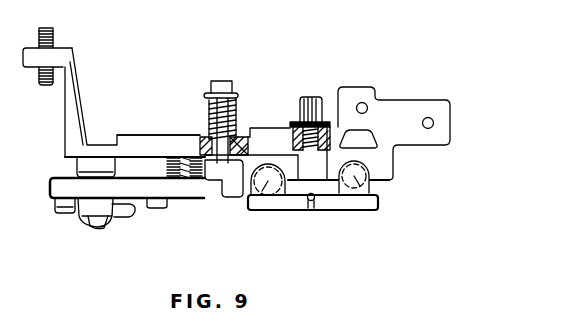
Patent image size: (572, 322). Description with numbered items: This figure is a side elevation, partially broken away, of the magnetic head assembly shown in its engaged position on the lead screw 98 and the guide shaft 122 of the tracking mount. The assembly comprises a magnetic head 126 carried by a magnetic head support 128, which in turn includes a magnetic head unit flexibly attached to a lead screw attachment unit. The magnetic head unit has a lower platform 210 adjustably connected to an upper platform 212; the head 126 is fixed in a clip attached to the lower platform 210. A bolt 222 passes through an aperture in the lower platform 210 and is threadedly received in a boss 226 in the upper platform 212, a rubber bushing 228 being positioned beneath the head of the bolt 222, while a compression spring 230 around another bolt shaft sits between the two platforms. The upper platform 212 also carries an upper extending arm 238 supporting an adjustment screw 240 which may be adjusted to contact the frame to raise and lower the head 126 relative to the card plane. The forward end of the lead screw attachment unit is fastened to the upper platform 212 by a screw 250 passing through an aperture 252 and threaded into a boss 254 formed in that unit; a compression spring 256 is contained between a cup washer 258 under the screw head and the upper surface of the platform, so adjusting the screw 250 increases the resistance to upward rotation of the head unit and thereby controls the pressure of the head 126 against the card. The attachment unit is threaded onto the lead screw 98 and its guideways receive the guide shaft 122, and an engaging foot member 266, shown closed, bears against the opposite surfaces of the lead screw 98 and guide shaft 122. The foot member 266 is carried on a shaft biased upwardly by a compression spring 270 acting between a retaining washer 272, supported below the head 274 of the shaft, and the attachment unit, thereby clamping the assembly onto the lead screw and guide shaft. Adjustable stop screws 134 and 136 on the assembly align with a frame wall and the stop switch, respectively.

The lead screw 98 is at (258, 212).
The guide shaft 122 is at (368, 188).
The magnetic head 126 is at (72, 217).
The magnetic head support 128 is at (98, 78).
The adjustable stop screw 134 is at (300, 178).
The adjustable stop screw 136 is at (428, 129).
The lower platform 210 is at (182, 188).
The upper platform 212 is at (127, 150).
The bolt 222 is at (98, 205).
The boss 226 is at (78, 162).
The rubber bushing 228 is at (103, 227).
The compression spring 230 is at (165, 158).
The upper extending arm 238 is at (69, 51).
The adjustment screw 240 is at (53, 28).
The screw 250 is at (221, 84).
The aperture 252 is at (248, 140).
The boss 254 is at (232, 197).
The compression spring 256 is at (231, 113).
The cup washer 258 is at (236, 92).
The engaging foot member 266 is at (348, 202).
The compression spring 270 is at (368, 108).
The retaining washer 272 is at (327, 125).
The head 274 is at (308, 97).